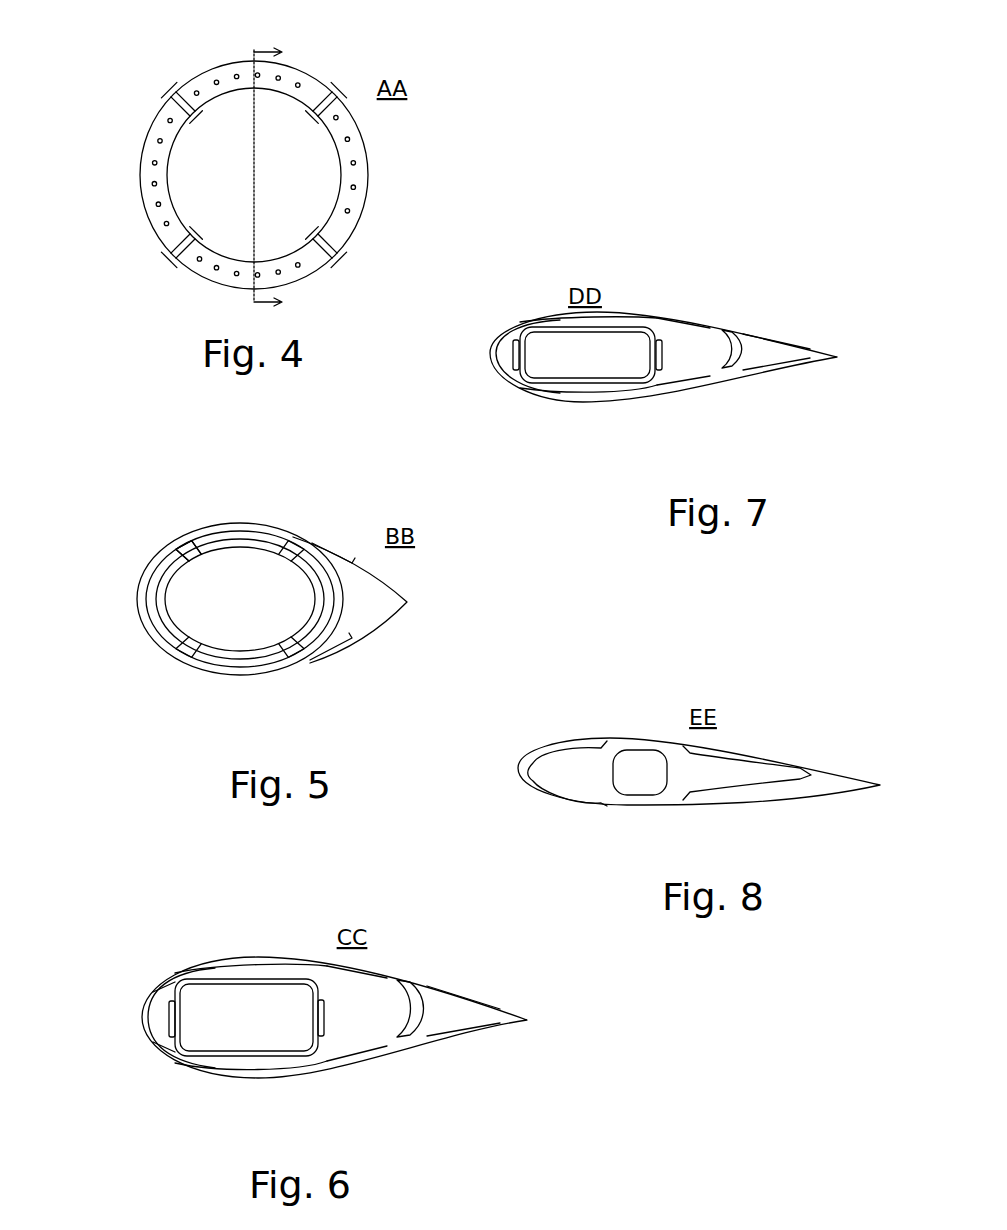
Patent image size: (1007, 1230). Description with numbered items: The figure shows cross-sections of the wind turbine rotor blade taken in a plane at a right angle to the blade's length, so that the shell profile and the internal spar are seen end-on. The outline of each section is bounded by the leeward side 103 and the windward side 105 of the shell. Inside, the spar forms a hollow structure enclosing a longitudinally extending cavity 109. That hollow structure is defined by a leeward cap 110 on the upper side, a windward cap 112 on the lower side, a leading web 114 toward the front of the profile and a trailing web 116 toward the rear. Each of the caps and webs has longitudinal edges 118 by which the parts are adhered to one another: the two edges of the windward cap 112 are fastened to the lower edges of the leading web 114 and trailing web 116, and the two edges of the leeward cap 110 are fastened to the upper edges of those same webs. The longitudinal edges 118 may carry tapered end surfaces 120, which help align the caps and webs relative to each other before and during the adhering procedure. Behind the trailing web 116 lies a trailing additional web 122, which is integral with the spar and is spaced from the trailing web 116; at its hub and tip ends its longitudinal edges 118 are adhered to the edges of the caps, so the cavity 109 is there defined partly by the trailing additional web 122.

In FIG. 5, the leeward side 103 is at (222, 518).
In FIG. 7, the leeward side 103 is at (633, 300).
In FIG. 8, the leeward side 103 is at (612, 720).
In FIG. 6, the leeward side 103 is at (207, 953).
In FIG. 5, the windward side 105 is at (238, 680).
In FIG. 7, the windward side 105 is at (583, 410).
In FIG. 8, the windward side 105 is at (608, 812).
In FIG. 6, the windward side 105 is at (232, 1085).
In FIG. 4, the cavity 109 is at (297, 182).
In FIG. 5, the cavity 109 is at (240, 600).
In FIG. 7, the cavity 109 is at (590, 352).
In FIG. 6, the cavity 109 is at (247, 1017).
In FIG. 4, the leeward cap 110 is at (310, 93).
In FIG. 5, the leeward cap 110 is at (258, 540).
In FIG. 7, the leeward cap 110 is at (548, 320).
In FIG. 6, the leeward cap 110 is at (262, 975).
In FIG. 4, the windward cap 112 is at (303, 260).
In FIG. 5, the windward cap 112 is at (268, 658).
In FIG. 7, the windward cap 112 is at (602, 385).
In FIG. 6, the windward cap 112 is at (278, 1055).
In FIG. 4, the leading web 114 is at (148, 181).
In FIG. 5, the leading web 114 is at (153, 602).
In FIG. 7, the leading web 114 is at (508, 357).
In FIG. 6, the leading web 114 is at (166, 1030).
In FIG. 7, the trailing web 116 is at (660, 350).
In FIG. 6, the trailing web 116 is at (325, 1015).
In FIG. 4, the longitudinal edges 118 is at (192, 100).
In FIG. 5, the longitudinal edges 118 is at (188, 543).
In FIG. 6, the longitudinal edges 118 is at (172, 990).
In FIG. 5, the tapered end surfaces 120 is at (189, 551).
In FIG. 4, the trailing additional web 122 is at (357, 177).
In FIG. 5, the trailing additional web 122 is at (325, 602).
In FIG. 7, the trailing additional web 122 is at (735, 345).
In FIG. 6, the trailing additional web 122 is at (418, 1007).